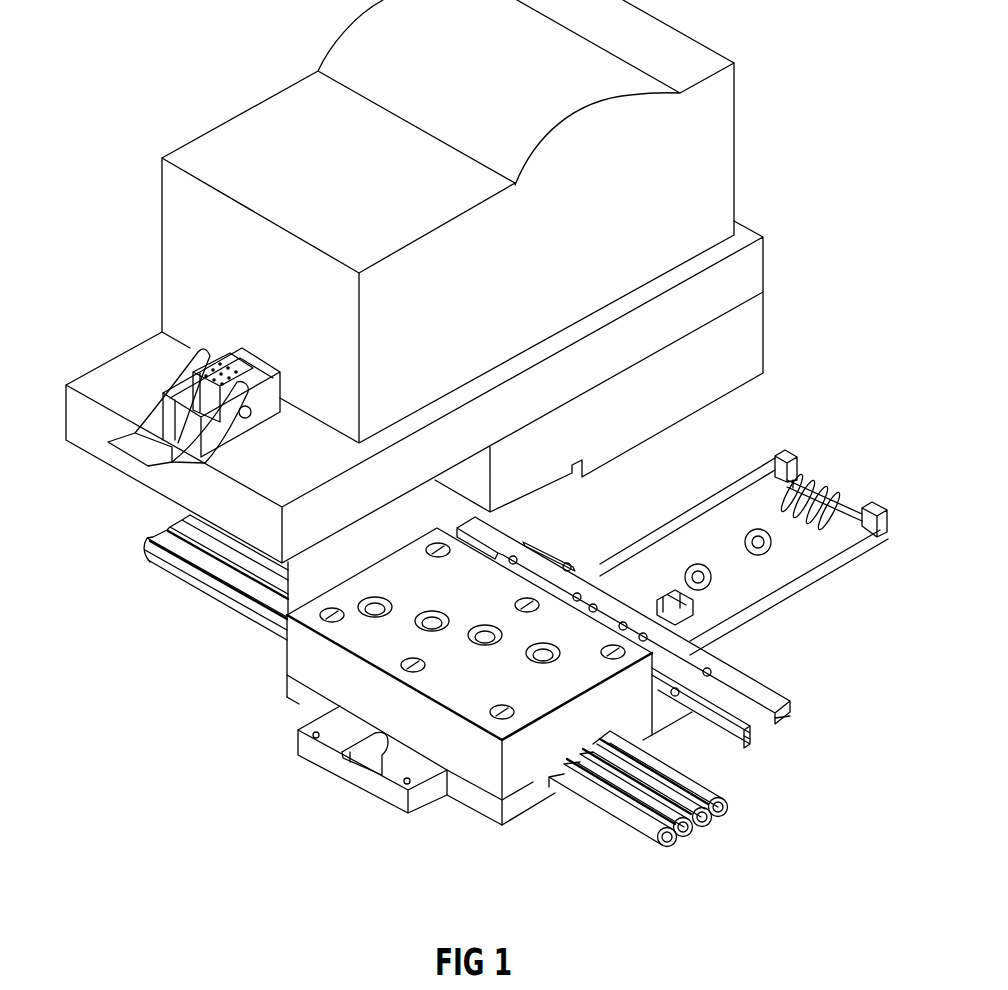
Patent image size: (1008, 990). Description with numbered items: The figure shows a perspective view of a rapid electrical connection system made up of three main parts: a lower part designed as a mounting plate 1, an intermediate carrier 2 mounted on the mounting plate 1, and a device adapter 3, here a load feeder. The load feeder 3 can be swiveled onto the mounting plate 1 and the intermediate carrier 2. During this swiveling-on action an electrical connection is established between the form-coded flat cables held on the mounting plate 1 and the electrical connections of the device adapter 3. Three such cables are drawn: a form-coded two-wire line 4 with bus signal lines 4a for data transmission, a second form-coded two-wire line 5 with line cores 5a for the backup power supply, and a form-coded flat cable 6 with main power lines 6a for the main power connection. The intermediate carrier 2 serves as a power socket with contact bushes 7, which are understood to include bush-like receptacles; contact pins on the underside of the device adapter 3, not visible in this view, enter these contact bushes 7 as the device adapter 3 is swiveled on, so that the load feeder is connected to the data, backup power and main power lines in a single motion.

The mounting plate 1 is at (797, 582).
The intermediate carrier 2 is at (303, 654).
The device adapter 3 is at (698, 118).
The form-coded two-wire line 4 is at (773, 693).
The bus signal lines 4a is at (780, 712).
The form-coded two-wire line 5 is at (735, 715).
The line cores 5a is at (752, 732).
The form-coded flat cable 6 is at (665, 818).
The main power lines 6a is at (722, 822).
The contact bushes 7 is at (428, 629).